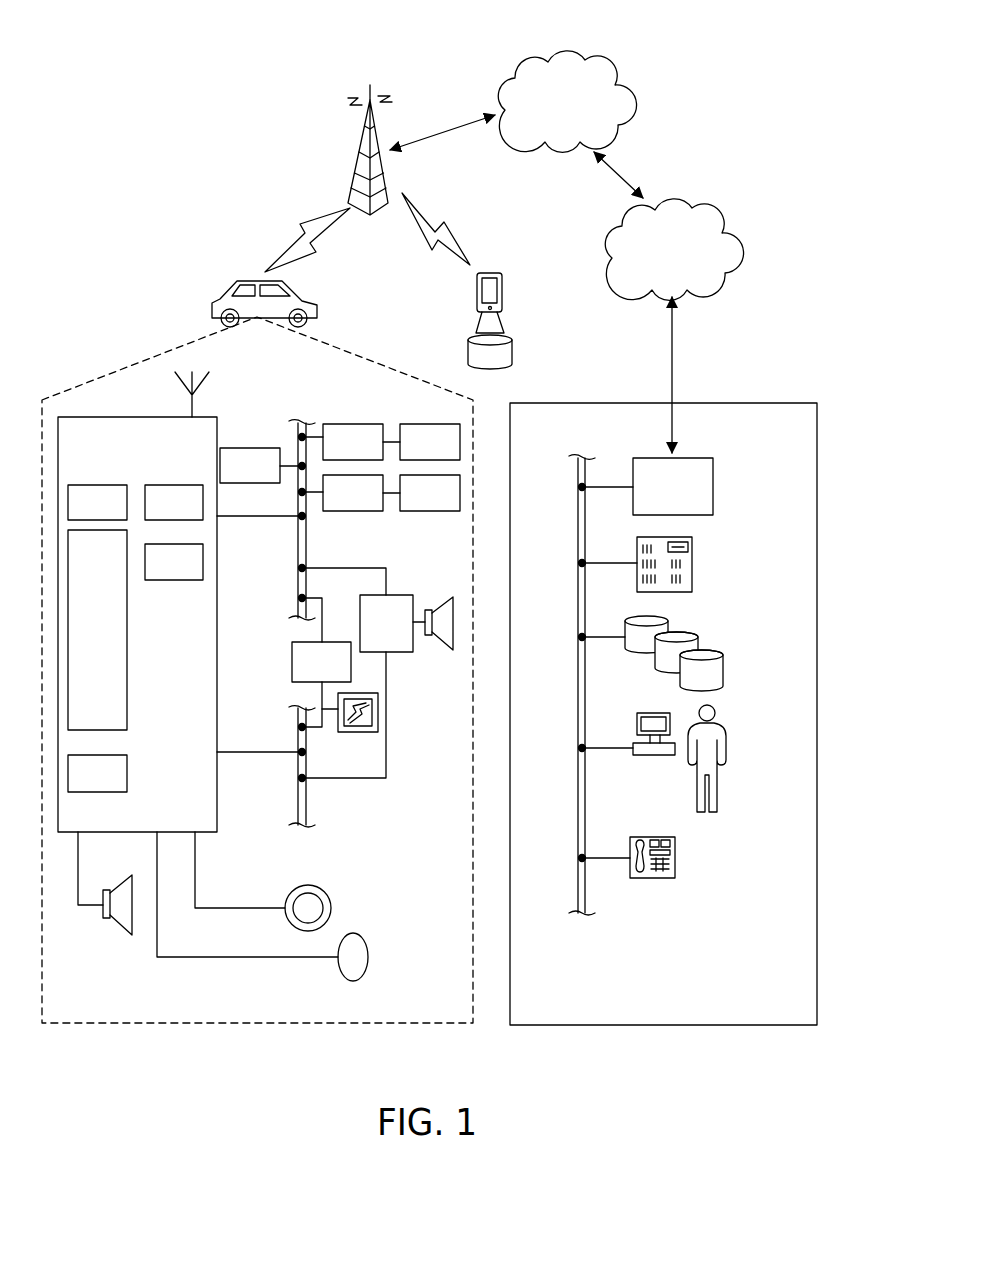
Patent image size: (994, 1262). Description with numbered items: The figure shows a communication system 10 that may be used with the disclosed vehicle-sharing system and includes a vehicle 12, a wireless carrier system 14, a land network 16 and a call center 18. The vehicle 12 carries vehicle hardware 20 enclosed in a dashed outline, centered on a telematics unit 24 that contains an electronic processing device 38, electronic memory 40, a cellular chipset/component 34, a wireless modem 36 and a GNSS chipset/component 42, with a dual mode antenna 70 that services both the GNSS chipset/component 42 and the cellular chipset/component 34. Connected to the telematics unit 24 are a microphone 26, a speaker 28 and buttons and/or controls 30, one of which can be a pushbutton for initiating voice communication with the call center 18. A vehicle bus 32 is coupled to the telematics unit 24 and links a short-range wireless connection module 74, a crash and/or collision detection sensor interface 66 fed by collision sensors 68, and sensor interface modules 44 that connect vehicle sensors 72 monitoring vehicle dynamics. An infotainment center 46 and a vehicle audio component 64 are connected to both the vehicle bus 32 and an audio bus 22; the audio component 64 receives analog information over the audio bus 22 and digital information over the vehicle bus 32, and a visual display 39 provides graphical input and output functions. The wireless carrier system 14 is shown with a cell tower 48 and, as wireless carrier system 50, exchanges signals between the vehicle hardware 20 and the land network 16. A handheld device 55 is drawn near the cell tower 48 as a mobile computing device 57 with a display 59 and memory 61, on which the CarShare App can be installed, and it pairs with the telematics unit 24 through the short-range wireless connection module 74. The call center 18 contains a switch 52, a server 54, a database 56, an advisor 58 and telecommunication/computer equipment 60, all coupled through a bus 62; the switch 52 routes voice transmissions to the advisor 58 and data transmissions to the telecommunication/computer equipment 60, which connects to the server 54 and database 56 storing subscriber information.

The communication system 10 is at (185, 125).
The vehicle 12 is at (212, 302).
The wireless carrier system 14 is at (608, 102).
The land network 16 is at (612, 230).
The call center 18 is at (694, 1026).
The vehicle hardware 20 is at (240, 1027).
The audio bus 22 is at (298, 800).
The telematics unit 24 is at (217, 660).
The microphone 26 is at (356, 934).
The speaker 28 is at (118, 935).
The buttons and/or controls 30 is at (318, 885).
The vehicle bus 32 is at (307, 535).
The cellular chipset/component 34 is at (100, 485).
The wireless modem 36 is at (173, 485).
The electronic processing device 38 is at (127, 630).
The visual display 39 is at (378, 724).
The electronic memory 40 is at (127, 770).
The GNSS chipset/component 42 is at (203, 562).
The sensor interface modules 44 is at (375, 511).
The infotainment center 46 is at (292, 666).
The cell tower 48 is at (380, 128).
The wireless carrier system 50 is at (525, 135).
The switch 52 is at (713, 475).
The server 54 is at (692, 565).
The mobile device 55 is at (493, 286).
The database 56 is at (723, 668).
The mobile computing device 57 is at (477, 290).
The advisor 58 is at (727, 745).
The display 59 is at (497, 293).
The telecommunication/computer equipment 60 is at (675, 850).
The memory 61 is at (512, 358).
The bus 62 is at (578, 676).
The vehicle audio component 64 is at (395, 652).
The vehicle crash and/or collision detection sensor interface 66 is at (350, 423).
The collision sensors 68 is at (415, 423).
The dual mode antenna 70 is at (194, 405).
The vehicle sensors 72 is at (447, 511).
The short-range wireless connection module 74 is at (265, 447).